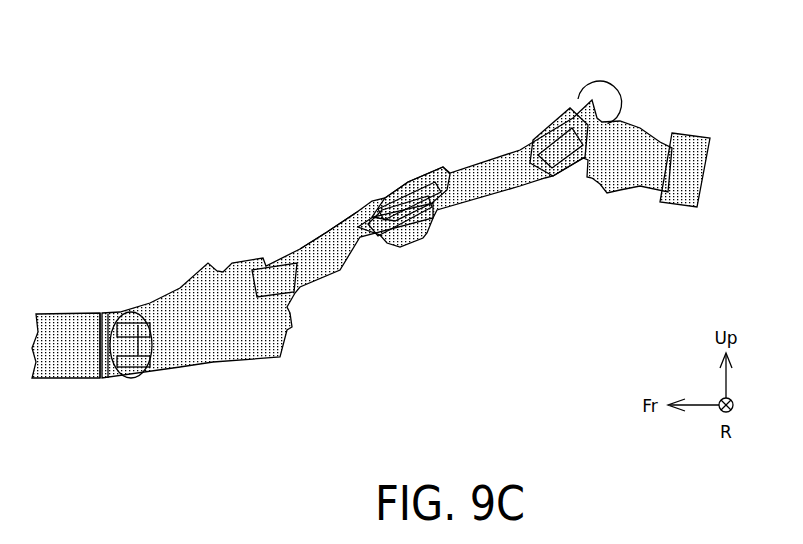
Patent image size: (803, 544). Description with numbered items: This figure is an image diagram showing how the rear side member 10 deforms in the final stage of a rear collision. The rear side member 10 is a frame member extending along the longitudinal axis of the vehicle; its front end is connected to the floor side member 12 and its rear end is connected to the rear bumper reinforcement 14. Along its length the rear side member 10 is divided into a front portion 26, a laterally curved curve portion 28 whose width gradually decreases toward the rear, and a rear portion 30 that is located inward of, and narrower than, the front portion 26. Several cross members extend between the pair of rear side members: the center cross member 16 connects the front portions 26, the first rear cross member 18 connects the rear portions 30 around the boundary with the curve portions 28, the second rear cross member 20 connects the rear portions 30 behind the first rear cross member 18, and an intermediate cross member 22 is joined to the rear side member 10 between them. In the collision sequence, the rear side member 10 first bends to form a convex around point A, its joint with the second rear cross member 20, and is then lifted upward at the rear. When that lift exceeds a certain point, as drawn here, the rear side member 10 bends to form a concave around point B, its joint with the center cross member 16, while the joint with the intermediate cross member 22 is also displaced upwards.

The rear side member 10 is at (446, 126).
The floor side member 12 is at (80, 312).
The rear bumper reinforcement 14 is at (693, 131).
The center cross member 16 is at (138, 322).
The first rear cross member 18 is at (383, 200).
The second rear cross member 20 is at (548, 122).
The intermediate cross member 22 is at (267, 256).
The front portion 26 is at (108, 311).
The curve portion 28 is at (327, 240).
The rear portion 30 is at (487, 201).
The point A is at (597, 83).
The point B is at (127, 388).